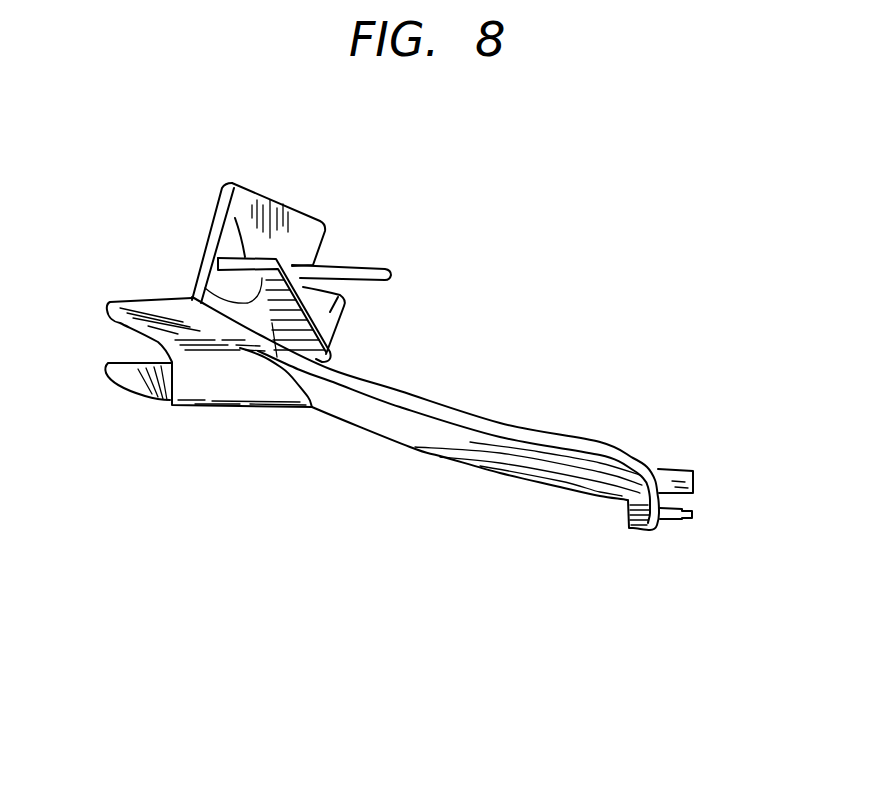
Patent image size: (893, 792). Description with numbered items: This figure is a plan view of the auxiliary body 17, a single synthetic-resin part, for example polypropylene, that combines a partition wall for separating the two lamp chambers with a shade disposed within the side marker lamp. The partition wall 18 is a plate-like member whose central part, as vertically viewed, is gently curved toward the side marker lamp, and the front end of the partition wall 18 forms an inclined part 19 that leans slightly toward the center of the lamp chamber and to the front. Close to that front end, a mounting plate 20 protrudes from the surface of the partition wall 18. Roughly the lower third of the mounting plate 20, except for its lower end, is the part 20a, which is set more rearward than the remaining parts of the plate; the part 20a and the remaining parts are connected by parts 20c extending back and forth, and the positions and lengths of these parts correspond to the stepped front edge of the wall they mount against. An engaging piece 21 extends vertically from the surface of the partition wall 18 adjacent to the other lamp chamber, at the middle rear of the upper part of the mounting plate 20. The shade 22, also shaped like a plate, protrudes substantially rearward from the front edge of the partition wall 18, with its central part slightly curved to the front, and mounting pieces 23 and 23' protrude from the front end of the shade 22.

The auxiliary body 17 is at (412, 447).
The partition wall 18 is at (263, 188).
The inclined part 19 is at (156, 406).
The mounting plate 20 is at (215, 217).
The part of the mounting plate 20a is at (200, 278).
The connecting parts 20c is at (345, 297).
The engaging piece 21 is at (395, 274).
The shade 22 is at (540, 485).
The mounting piece 23 is at (705, 466).
The mounting piece 23' is at (713, 529).